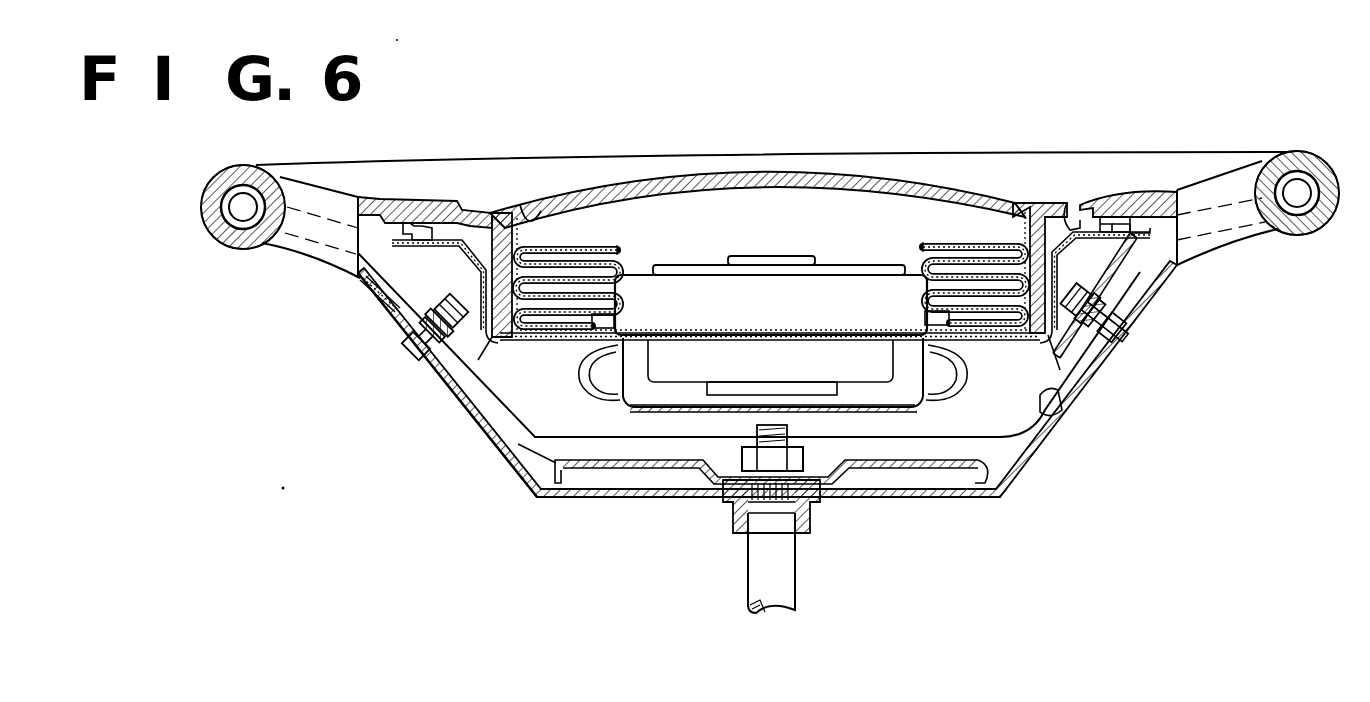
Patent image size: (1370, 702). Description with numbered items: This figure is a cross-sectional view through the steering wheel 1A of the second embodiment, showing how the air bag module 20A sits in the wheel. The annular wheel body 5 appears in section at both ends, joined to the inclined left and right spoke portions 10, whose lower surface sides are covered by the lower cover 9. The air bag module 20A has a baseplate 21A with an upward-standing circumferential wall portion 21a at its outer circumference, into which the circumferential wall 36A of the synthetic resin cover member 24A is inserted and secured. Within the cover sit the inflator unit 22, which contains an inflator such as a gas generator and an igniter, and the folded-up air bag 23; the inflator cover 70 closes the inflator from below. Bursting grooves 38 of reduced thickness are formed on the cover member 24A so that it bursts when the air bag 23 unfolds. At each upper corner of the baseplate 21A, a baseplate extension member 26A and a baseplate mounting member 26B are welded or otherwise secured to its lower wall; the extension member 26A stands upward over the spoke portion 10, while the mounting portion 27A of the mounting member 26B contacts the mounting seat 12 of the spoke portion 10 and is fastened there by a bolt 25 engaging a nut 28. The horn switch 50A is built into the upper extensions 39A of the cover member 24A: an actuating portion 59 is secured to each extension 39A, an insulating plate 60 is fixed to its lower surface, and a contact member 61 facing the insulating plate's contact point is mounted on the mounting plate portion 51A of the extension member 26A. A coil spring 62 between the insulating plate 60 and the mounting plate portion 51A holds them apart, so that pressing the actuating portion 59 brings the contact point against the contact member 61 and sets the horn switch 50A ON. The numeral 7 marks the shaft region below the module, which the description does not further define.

The steering wheel pad assembly 1A is at (890, 120).
The cover member 24A is at (768, 168).
The bursting grooves 38 is at (544, 210).
The extensions 39A is at (1046, 192).
The contact members 61 is at (1089, 195).
The insulating plates 60 is at (1108, 200).
The actuating portions 59 is at (1131, 205).
The horn switch 50A is at (1184, 166).
The coil spring 62 is at (1177, 195).
The circumferential wall 36A is at (535, 262).
The air bag 23 is at (600, 300).
The inflator unit 22 is at (845, 265).
The nut 28 is at (1035, 255).
The wheel body 5 is at (1326, 222).
The mounting plate portions 51A is at (1180, 242).
The spoke portions 10 is at (1137, 258).
The baseplate extension members 26A is at (1088, 300).
The mounting seat 12 is at (1112, 330).
The bolts 25 is at (1100, 342).
The mounting portion 27A is at (1062, 372).
The baseplate mounting members 26B is at (1040, 408).
The circumferential wall portion 21a is at (1063, 415).
The baseplate 21A is at (979, 345).
The inflator cover 70 is at (880, 420).
The steering shaft 7 is at (745, 565).
The air bag module 20A is at (616, 426).
The lower cover 9 is at (484, 433).